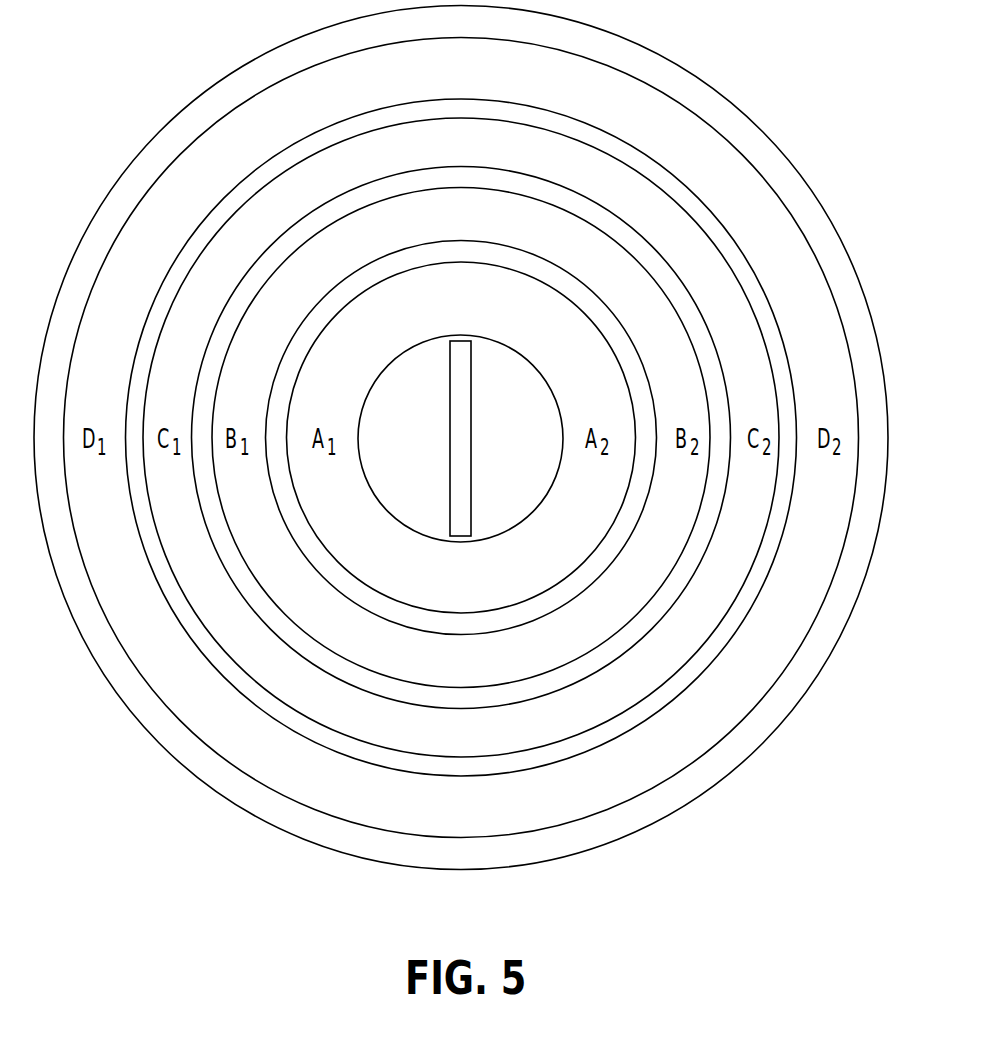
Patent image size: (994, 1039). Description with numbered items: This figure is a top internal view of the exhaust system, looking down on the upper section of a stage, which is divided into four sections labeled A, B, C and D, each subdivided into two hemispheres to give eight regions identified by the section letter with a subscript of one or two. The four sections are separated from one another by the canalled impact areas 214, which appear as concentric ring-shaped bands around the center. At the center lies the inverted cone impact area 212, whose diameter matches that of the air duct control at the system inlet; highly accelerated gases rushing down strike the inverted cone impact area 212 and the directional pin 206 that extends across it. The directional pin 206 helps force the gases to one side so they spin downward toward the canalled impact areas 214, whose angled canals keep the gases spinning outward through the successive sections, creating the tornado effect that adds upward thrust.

The canalled impact areas 214 is at (505, 112).
The inverted cone impact area 212 is at (513, 372).
The directional pin 206 is at (463, 473).